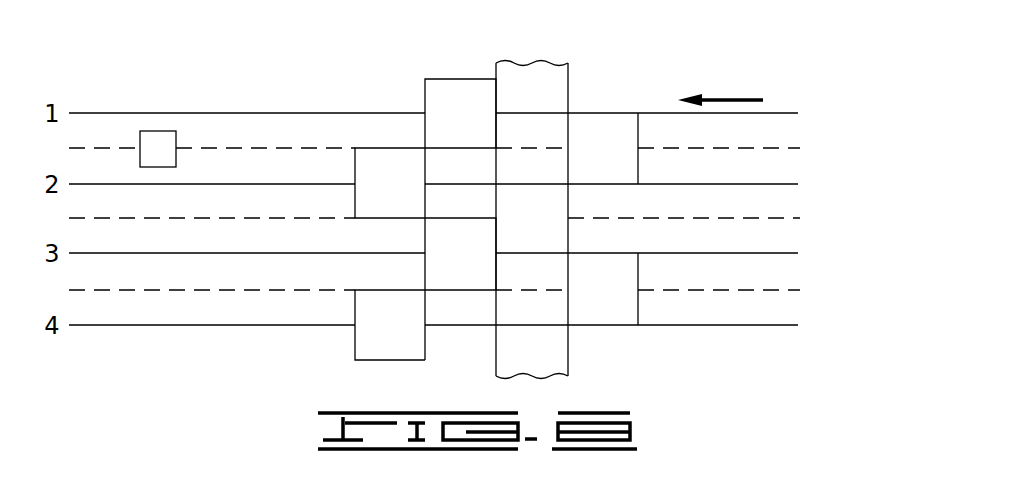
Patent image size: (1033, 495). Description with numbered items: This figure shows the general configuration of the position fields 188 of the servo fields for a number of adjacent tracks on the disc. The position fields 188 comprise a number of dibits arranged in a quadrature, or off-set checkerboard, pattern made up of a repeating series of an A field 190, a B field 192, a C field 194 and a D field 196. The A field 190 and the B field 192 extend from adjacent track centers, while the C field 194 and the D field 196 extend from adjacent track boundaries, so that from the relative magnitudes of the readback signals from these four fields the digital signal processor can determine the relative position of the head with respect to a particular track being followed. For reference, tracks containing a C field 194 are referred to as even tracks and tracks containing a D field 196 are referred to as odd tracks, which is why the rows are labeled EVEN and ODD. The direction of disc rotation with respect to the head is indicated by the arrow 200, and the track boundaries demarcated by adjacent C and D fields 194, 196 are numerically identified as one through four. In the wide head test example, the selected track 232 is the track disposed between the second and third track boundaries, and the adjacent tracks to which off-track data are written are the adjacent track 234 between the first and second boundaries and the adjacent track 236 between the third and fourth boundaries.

The position field 188 is at (384, 58).
The A field 190 is at (365, 178).
The B field 192 is at (430, 100).
The C field 194 is at (542, 62).
The D field 196 is at (633, 140).
The arrow 200 is at (728, 97).
The selected track 232 is at (772, 202).
The adjacent track 234 is at (772, 134).
The adjacent track 236 is at (775, 275).